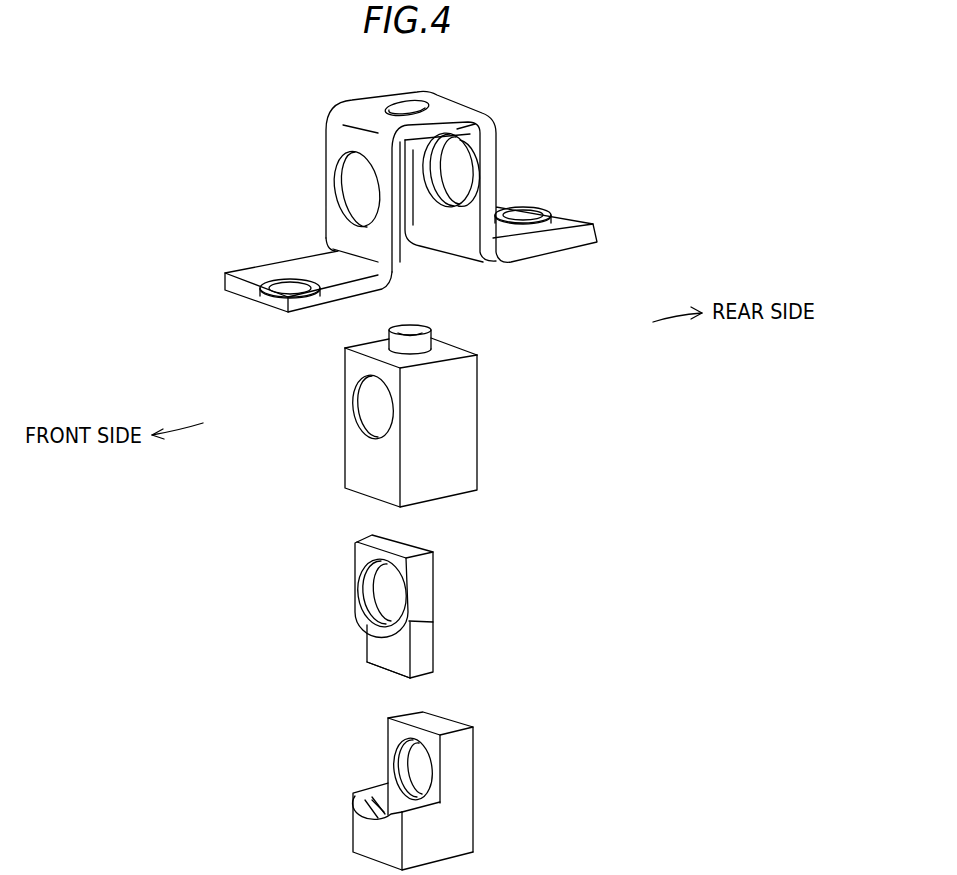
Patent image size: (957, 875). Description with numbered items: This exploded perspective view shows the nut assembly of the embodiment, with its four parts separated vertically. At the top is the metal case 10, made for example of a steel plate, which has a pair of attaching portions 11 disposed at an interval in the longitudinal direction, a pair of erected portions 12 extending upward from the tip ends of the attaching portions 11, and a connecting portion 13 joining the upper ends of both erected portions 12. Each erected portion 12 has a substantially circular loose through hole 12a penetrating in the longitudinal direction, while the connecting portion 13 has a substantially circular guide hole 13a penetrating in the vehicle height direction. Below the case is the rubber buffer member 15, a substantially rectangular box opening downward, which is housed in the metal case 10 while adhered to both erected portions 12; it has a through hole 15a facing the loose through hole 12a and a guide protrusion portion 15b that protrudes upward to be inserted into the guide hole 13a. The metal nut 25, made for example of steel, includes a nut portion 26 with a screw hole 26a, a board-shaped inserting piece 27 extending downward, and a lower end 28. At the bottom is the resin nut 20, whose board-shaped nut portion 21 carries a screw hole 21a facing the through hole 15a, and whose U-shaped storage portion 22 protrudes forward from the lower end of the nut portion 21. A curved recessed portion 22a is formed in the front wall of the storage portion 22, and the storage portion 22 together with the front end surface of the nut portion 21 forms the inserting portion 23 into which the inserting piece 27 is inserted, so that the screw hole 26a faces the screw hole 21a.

The metal case 10 is at (402, 192).
The attaching portion 11 is at (247, 294).
The erected portion 12 is at (413, 195).
The loose through hole 12a is at (347, 207).
The connecting portion 13 is at (379, 93).
The guide hole 13a is at (400, 103).
The buffer member 15 is at (409, 406).
The through hole 15a is at (366, 425).
The guide protrusion portion 15b is at (427, 331).
The resin nut 20 is at (431, 775).
The nut portion 21 is at (455, 782).
The screw hole 21a is at (413, 784).
The storage portion 22 is at (387, 826).
The recessed portion 22a is at (368, 809).
The inserting portion 23 is at (387, 805).
The metal nut 25 is at (413, 603).
The nut portion 26 is at (382, 577).
The screw hole 26a is at (378, 608).
The inserting piece 27 is at (433, 648).
The lower end 28 is at (383, 670).